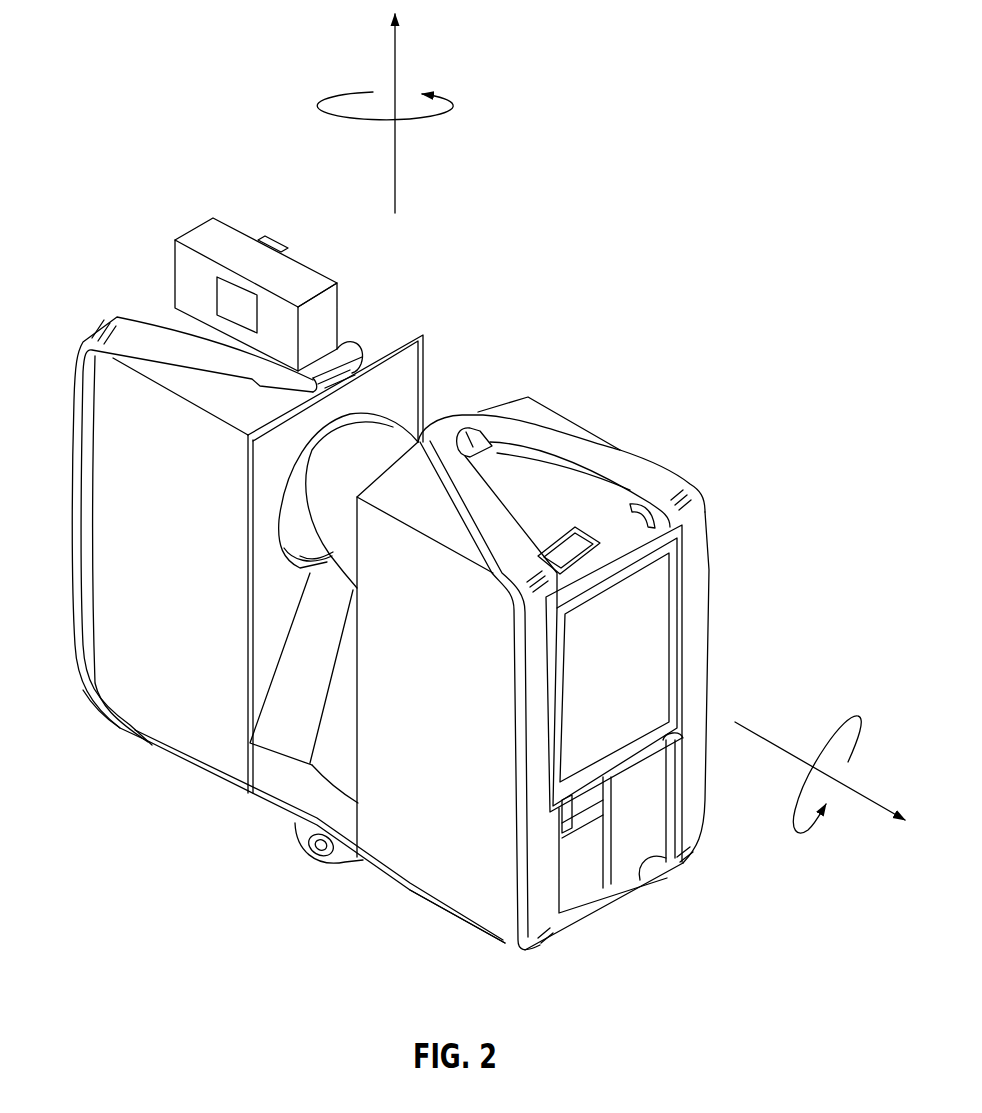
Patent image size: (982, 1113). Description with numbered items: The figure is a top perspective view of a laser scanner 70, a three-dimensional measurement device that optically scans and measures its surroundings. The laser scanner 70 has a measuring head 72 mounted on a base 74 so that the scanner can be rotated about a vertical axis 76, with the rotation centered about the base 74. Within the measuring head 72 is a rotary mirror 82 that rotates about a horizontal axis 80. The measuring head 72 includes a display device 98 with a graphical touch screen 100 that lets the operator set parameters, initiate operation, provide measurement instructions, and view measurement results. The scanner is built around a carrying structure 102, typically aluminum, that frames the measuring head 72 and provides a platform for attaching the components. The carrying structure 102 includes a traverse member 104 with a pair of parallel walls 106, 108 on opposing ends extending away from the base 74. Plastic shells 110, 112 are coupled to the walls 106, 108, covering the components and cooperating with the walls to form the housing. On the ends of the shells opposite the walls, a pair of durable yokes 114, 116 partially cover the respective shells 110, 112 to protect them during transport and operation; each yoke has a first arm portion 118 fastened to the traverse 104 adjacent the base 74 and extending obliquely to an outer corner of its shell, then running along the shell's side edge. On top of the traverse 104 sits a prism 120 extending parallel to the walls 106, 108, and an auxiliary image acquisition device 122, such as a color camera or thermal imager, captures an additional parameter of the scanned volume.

The laser scanner 70 is at (107, 95).
The measuring head 72 is at (684, 330).
The base 74 is at (312, 848).
The vertical axis 76 is at (393, 50).
The horizontal axis 80 is at (877, 800).
The rotary mirror 82 is at (352, 483).
The display device 98 is at (752, 644).
The graphical touch screen 100 is at (640, 630).
The carrying structure 102 is at (168, 846).
The traverse member 104 is at (342, 830).
The wall 106 is at (517, 400).
The wall 108 is at (402, 360).
The shell 110 is at (107, 528).
The shell 112 is at (497, 887).
The yoke 114 is at (630, 470).
The yoke 116 is at (118, 338).
The first arm portion 118 is at (83, 697).
The prism 120 is at (356, 628).
The auxiliary image acquisition device 122 is at (195, 227).